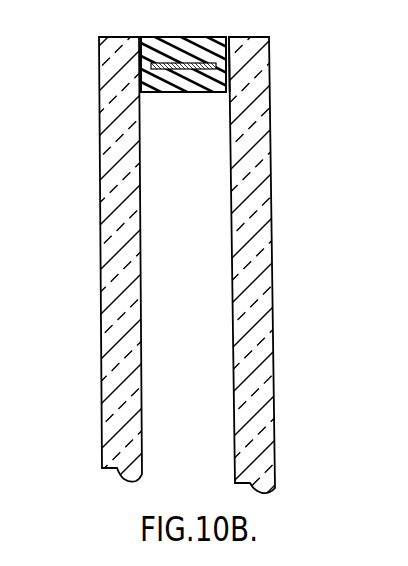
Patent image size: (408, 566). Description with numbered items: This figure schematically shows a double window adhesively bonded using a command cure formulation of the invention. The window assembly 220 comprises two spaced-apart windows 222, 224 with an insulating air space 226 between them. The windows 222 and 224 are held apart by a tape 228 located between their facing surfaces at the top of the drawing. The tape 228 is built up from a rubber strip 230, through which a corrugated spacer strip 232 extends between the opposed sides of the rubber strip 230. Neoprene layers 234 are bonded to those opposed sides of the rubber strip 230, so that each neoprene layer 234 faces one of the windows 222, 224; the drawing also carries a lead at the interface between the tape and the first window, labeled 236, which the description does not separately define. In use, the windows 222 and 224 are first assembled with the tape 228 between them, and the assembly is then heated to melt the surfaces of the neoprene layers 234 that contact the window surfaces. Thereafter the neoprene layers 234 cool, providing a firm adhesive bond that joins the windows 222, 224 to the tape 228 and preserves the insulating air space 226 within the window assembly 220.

The window assembly 220 is at (284, 245).
The window 222 is at (110, 352).
The window 224 is at (265, 329).
The insulating air space 226 is at (207, 205).
The tape 228 is at (203, 18).
The rubber strip 230 is at (182, 91).
The corrugated spacer strip 232 is at (171, 62).
The neoprene layers 234 is at (233, 50).
The left joint 236 is at (140, 50).